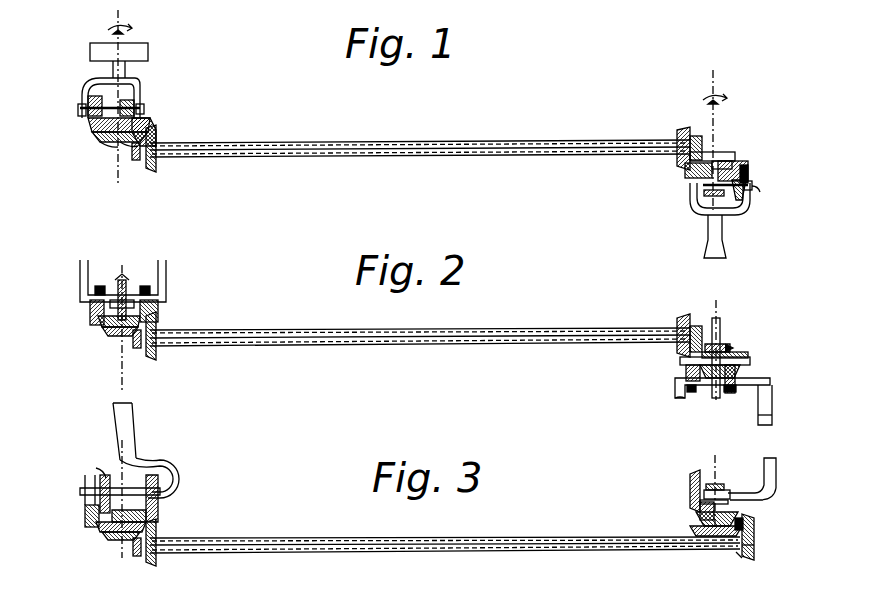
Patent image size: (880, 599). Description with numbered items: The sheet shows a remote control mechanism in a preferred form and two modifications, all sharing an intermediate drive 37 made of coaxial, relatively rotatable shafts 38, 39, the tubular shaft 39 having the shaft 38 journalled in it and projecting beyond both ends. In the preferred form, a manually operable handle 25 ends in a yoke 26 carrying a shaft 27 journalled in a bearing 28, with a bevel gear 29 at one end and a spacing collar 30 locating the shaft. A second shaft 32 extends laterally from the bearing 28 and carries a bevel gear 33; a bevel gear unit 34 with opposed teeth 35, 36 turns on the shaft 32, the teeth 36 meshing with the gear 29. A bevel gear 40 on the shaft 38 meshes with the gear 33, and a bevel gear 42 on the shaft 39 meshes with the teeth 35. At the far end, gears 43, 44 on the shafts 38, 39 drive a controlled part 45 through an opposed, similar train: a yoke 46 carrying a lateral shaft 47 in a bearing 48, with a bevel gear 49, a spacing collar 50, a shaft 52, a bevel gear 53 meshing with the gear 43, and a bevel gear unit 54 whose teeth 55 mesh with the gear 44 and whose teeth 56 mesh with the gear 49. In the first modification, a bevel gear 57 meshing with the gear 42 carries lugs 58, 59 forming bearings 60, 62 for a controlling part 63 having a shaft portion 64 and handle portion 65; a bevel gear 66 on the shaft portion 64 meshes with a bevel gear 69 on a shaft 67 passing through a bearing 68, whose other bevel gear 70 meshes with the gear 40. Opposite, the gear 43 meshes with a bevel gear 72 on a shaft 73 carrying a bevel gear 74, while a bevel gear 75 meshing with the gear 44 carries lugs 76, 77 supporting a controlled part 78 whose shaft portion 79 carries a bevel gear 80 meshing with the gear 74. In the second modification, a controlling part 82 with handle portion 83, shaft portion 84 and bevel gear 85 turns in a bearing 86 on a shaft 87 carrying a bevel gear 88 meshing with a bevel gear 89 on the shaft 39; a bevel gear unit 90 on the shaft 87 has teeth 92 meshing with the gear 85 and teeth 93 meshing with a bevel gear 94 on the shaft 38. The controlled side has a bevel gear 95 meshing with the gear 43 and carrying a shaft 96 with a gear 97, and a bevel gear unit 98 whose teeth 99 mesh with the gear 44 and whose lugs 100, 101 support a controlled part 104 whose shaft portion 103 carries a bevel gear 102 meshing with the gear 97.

In FIG. 1, the handle 25 is at (724, 240).
In FIG. 1, the yoke 26 is at (696, 206).
In FIG. 1, the shaft 27 is at (755, 192).
In FIG. 1, the bearing 28 is at (706, 195).
In FIG. 1, the bevel gear 29 is at (746, 185).
In FIG. 1, the spacing collar 30 is at (712, 187).
In FIG. 1, the second shaft 32 is at (742, 165).
In FIG. 1, the bevel gear 33 is at (730, 158).
In FIG. 1, the bevel gear unit 34 is at (748, 172).
In FIG. 1, the teeth 35 is at (714, 150).
In FIG. 1, the teeth 36 is at (702, 172).
In FIG. 1, the intermediate drive 37 is at (412, 142).
In FIG. 2, the intermediate drive 37 is at (425, 329).
In FIG. 3, the intermediate drive 37 is at (425, 537).
In FIG. 1, the shaft 38 is at (515, 149).
In FIG. 2, the shaft 38 is at (520, 336).
In FIG. 3, the shaft 38 is at (505, 544).
In FIG. 1, the tubular shaft 39 is at (488, 156).
In FIG. 2, the tubular shaft 39 is at (478, 344).
In FIG. 3, the tubular shaft 39 is at (462, 552).
In FIG. 1, the bevel gear 40 is at (698, 138).
In FIG. 2, the bevel gear 40 is at (698, 326).
In FIG. 1, the bevel gear 42 is at (676, 134).
In FIG. 2, the bevel gear 42 is at (676, 320).
In FIG. 1, the gear 43 is at (137, 162).
In FIG. 2, the gear 43 is at (136, 350).
In FIG. 3, the gear 43 is at (137, 556).
In FIG. 1, the gear 44 is at (152, 168).
In FIG. 2, the gear 44 is at (152, 360).
In FIG. 3, the gear 44 is at (152, 566).
In FIG. 1, the controlled part 45 is at (148, 52).
In FIG. 1, the yoke 46 is at (138, 92).
In FIG. 1, the lateral shaft 47 is at (82, 110).
In FIG. 1, the bearing 48 is at (105, 106).
In FIG. 1, the bevel gear 49 is at (85, 122).
In FIG. 1, the spacing collar 50 is at (136, 110).
In FIG. 1, the shaft 52 is at (100, 138).
In FIG. 1, the bevel gear 53 is at (110, 148).
In FIG. 1, the bevel gear unit 54 is at (95, 130).
In FIG. 1, the teeth 55 is at (130, 148).
In FIG. 1, the teeth 56 is at (150, 130).
In FIG. 2, the bevel gear 57 is at (750, 362).
In FIG. 2, the lug 58 is at (690, 372).
In FIG. 2, the lug 59 is at (755, 380).
In FIG. 2, the bearing 60 is at (680, 398).
In FIG. 2, the bearing 62 is at (732, 394).
In FIG. 2, the controlling part 63 is at (770, 395).
In FIG. 2, the shaft portion 64 is at (692, 392).
In FIG. 2, the handle portion 65 is at (770, 412).
In FIG. 2, the bevel gear 66 is at (730, 392).
In FIG. 2, the shaft 67 is at (744, 356).
In FIG. 2, the bearing 68 is at (722, 348).
In FIG. 2, the bevel gear 69 is at (706, 378).
In FIG. 2, the bevel gear 70 is at (716, 345).
In FIG. 2, the bevel gear 72 is at (112, 334).
In FIG. 2, the shaft 73 is at (104, 324).
In FIG. 2, the bevel gear 74 is at (158, 310).
In FIG. 2, the bevel gear 75 is at (92, 316).
In FIG. 2, the lug 76 is at (100, 286).
In FIG. 2, the lug 77 is at (145, 286).
In FIG. 2, the controlled part 78 is at (166, 280).
In FIG. 2, the shaft portion 79 is at (128, 300).
In FIG. 2, the bevel gear 80 is at (121, 280).
In FIG. 3, the controlling part 82 is at (760, 496).
In FIG. 3, the handle portion 83 is at (772, 470).
In FIG. 3, the shaft portion 84 is at (722, 490).
In FIG. 3, the bevel gear 85 is at (690, 476).
In FIG. 3, the bearing 86 is at (712, 484).
In FIG. 3, the shaft 87 is at (700, 506).
In FIG. 3, the bevel gear 88 is at (695, 530).
In FIG. 3, the bevel gear 89 is at (740, 554).
In FIG. 3, the bevel gear unit 90 is at (745, 520).
In FIG. 3, the teeth 92 is at (700, 516).
In FIG. 3, the teeth 93 is at (755, 530).
In FIG. 3, the bevel gear 94 is at (755, 546).
In FIG. 3, the bevel gear 95 is at (106, 536).
In FIG. 3, the shaft 96 is at (100, 526).
In FIG. 3, the gear 97 is at (148, 510).
In FIG. 3, the bevel gear unit 98 is at (158, 518).
In FIG. 3, the teeth 99 is at (86, 510).
In FIG. 3, the lug 100 is at (88, 476).
In FIG. 3, the lug 101 is at (160, 468).
In FIG. 3, the bevel gear 102 is at (100, 470).
In FIG. 3, the shaft portion 103 is at (112, 500).
In FIG. 3, the controlled part 104 is at (135, 455).